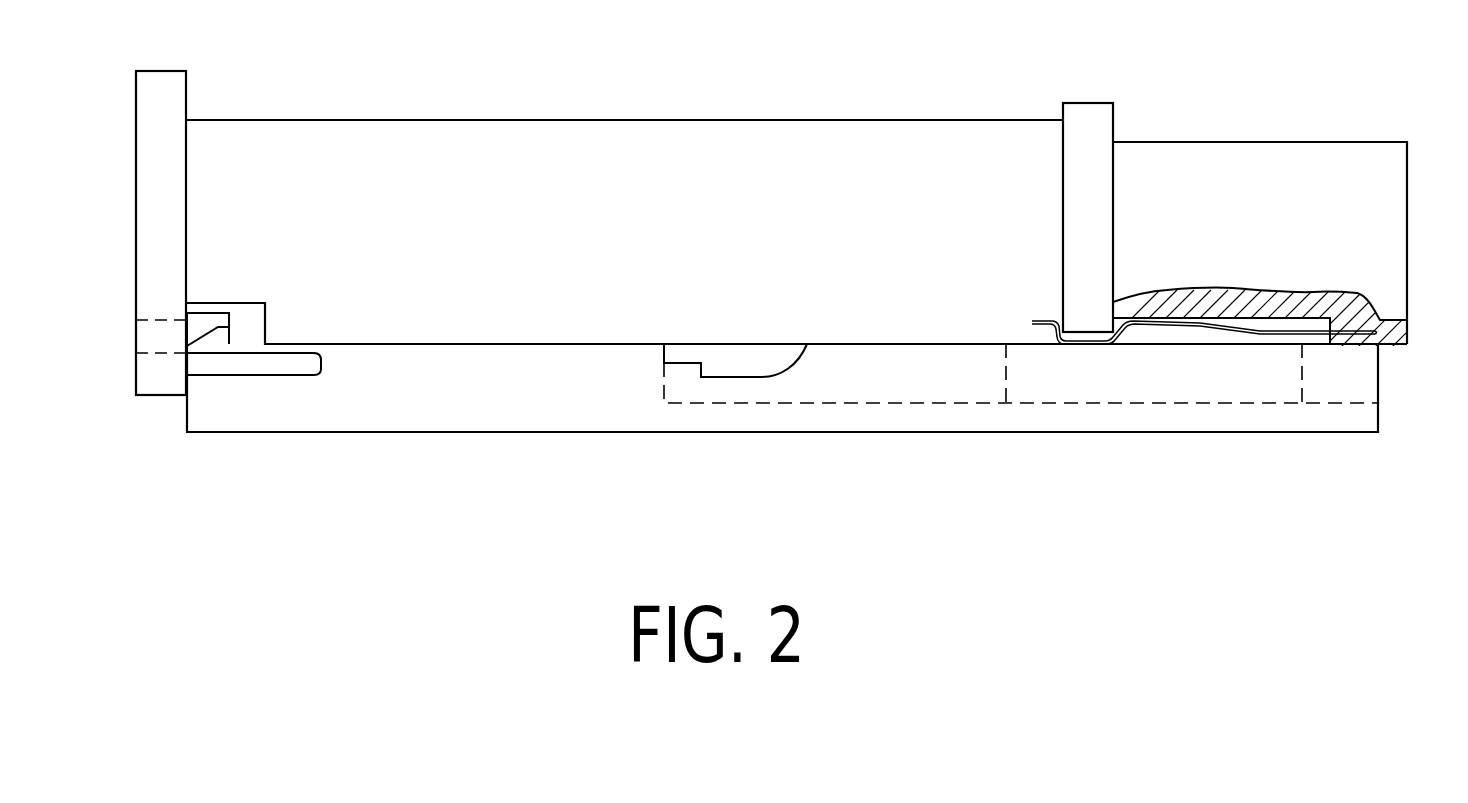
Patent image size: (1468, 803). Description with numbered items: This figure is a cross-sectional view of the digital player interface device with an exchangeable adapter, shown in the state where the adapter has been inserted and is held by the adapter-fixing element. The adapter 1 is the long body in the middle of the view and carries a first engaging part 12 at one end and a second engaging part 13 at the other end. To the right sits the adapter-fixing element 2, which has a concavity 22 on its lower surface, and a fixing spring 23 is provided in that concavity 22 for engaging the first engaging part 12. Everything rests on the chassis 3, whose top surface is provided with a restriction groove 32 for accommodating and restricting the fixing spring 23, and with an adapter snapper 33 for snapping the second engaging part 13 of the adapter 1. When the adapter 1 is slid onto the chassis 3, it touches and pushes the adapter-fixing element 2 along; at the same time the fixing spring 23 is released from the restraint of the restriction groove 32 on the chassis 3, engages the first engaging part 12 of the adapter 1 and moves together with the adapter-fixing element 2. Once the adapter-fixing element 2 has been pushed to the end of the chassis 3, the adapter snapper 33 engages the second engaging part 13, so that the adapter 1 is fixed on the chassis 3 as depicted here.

The adapter 1 is at (628, 148).
The adapter-fixing element 2 is at (1237, 178).
The chassis 3 is at (1353, 418).
The first engaging part 12 is at (1090, 310).
The second engaging part 13 is at (248, 332).
The concavity 22 is at (1318, 342).
The fixing spring 23 is at (1257, 333).
The restriction groove 32 is at (743, 352).
The adapter snapper 33 is at (208, 345).